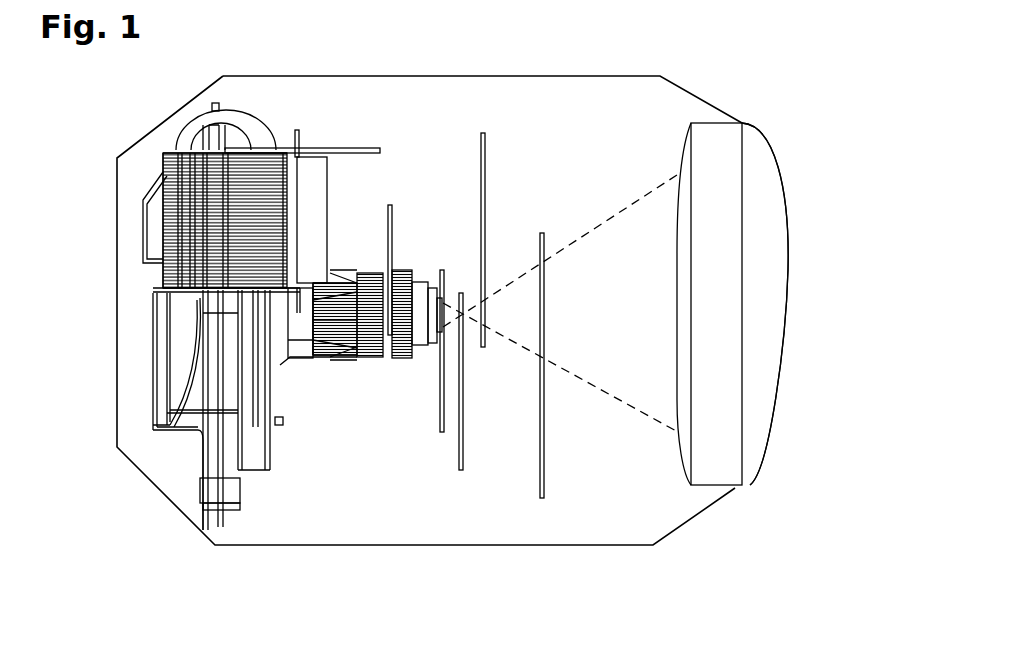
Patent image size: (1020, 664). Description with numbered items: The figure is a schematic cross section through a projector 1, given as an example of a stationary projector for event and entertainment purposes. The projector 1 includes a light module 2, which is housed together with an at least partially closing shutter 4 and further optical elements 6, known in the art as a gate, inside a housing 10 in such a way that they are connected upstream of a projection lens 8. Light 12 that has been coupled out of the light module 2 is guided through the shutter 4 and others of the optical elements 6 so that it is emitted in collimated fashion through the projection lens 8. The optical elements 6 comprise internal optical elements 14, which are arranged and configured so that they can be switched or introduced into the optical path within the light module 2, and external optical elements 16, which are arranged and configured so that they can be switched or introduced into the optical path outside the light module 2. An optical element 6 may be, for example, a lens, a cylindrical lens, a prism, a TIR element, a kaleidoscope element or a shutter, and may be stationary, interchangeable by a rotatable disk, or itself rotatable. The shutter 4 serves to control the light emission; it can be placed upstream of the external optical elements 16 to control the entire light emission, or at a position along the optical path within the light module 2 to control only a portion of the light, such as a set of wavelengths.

The projector 1 is at (824, 110).
The light module 2 is at (183, 455).
The shutter 4 is at (440, 400).
The optical elements 6 is at (476, 323).
The projection lens 8 is at (723, 458).
The housing 10 is at (618, 546).
The light 12 is at (633, 322).
The internal optical elements 14 is at (357, 150).
The external optical elements 16 is at (488, 153).